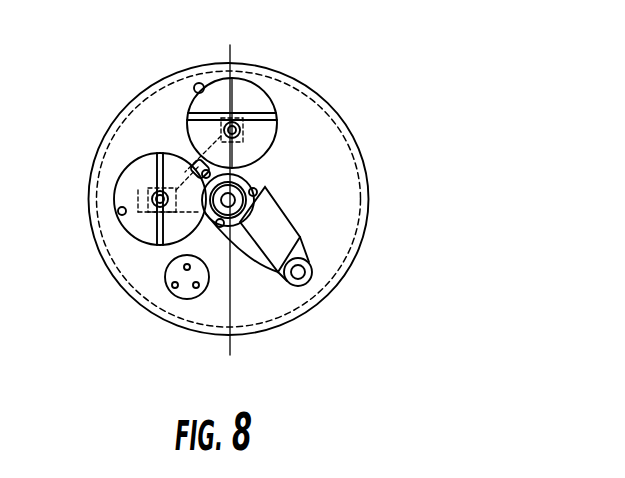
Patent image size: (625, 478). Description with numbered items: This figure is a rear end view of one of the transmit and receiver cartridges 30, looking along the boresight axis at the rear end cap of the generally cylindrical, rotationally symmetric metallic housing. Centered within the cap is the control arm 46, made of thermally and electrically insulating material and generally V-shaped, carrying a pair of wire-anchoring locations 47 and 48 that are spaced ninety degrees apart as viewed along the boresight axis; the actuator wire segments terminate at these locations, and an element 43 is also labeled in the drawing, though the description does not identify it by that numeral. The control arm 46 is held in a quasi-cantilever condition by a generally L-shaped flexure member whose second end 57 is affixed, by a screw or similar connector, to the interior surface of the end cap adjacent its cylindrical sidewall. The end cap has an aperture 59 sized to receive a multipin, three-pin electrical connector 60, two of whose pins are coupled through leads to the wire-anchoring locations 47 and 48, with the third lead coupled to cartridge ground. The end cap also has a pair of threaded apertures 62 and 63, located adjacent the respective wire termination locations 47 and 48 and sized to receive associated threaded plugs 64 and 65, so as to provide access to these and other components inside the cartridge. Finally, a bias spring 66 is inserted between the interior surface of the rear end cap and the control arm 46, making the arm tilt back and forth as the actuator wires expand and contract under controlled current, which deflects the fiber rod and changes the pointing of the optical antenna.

The cartridge 30 is at (232, 198).
The crank arm 43 is at (267, 192).
The control arm 46 is at (287, 220).
The wire-anchoring location 47 is at (238, 128).
The wire-anchoring location 48 is at (156, 196).
The second end of L-shaped flexure member 57 is at (311, 263).
The aperture 59 is at (163, 274).
The multipin electrical connector 60 is at (183, 296).
The threaded aperture 62 is at (192, 90).
The threaded aperture 63 is at (124, 217).
The threaded plug 64 is at (258, 87).
The threaded plug 65 is at (124, 182).
The bias spring 66 is at (195, 162).